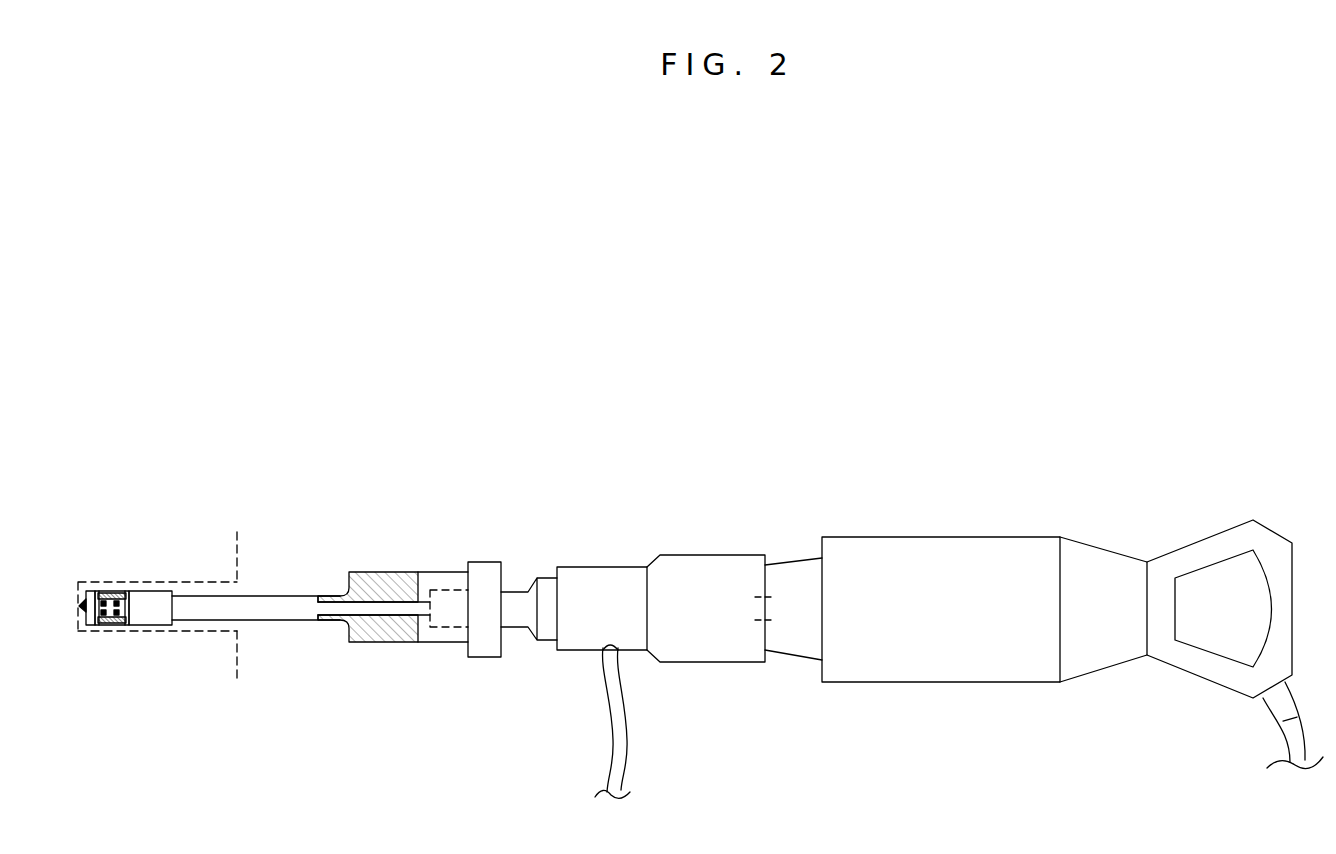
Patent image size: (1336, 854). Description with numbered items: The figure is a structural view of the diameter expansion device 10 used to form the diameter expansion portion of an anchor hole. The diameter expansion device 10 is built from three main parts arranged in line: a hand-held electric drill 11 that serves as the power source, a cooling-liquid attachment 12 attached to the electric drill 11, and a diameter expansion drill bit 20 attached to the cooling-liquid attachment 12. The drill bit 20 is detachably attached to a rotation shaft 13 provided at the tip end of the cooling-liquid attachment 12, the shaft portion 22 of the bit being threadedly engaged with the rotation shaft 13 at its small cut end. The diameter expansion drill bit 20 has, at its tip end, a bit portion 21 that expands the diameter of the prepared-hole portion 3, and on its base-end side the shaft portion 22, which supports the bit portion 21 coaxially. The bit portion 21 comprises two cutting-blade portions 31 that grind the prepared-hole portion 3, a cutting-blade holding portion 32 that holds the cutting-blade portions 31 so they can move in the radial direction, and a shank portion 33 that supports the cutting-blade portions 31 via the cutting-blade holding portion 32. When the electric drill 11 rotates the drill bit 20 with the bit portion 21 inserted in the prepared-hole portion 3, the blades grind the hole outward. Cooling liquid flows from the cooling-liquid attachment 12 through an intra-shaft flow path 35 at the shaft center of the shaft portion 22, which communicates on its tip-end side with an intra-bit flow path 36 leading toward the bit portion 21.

The diameter expansion device 10 is at (694, 286).
The electric drill 11 is at (1303, 450).
The cooling-liquid attachment 12 is at (767, 450).
The rotation shaft 13 is at (453, 603).
The diameter expansion drill bit 20 is at (465, 450).
The bit portion 21 is at (136, 678).
The shaft portion 22 is at (455, 524).
The prepared-hole portion 3 is at (195, 581).
The cutting-blade portions 31 is at (112, 628).
The cutting-blade holding portion 32 is at (160, 618).
The shank portion 33 is at (274, 612).
The intra-shaft flow path 35 is at (392, 610).
The intra-bit flow path 36 is at (335, 610).